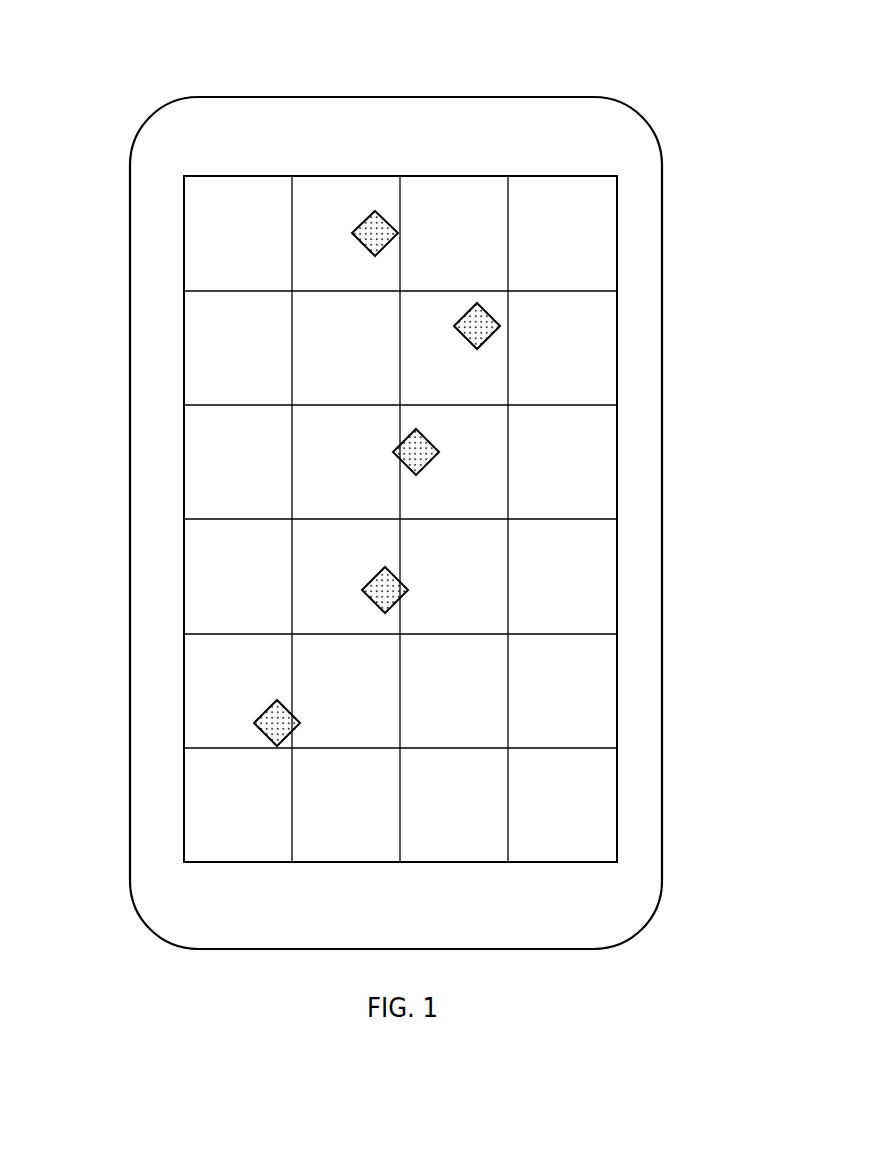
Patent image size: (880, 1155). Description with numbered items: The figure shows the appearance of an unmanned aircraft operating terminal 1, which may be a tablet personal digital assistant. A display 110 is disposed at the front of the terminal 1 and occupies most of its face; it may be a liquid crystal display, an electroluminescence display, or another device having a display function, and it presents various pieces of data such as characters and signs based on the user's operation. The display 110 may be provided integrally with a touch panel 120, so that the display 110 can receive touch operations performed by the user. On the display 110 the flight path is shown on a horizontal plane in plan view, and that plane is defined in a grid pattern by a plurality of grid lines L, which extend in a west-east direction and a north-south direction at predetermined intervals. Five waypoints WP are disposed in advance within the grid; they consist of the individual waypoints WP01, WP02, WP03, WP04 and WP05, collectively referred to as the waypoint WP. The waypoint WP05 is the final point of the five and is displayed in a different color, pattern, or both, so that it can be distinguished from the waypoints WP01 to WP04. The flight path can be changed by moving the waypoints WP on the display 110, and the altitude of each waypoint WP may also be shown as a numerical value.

The unmanned aircraft operating terminal 1 is at (403, 38).
The display 110 is at (616, 329).
The touch panel 120 is at (400, 519).
The grid lines L is at (508, 809).
The waypoint WP is at (282, 463).
The waypoint WP01 is at (280, 708).
The waypoint WP02 is at (388, 577).
The waypoint WP03 is at (420, 439).
The waypoint WP04 is at (482, 310).
The waypoint WP05 is at (383, 218).